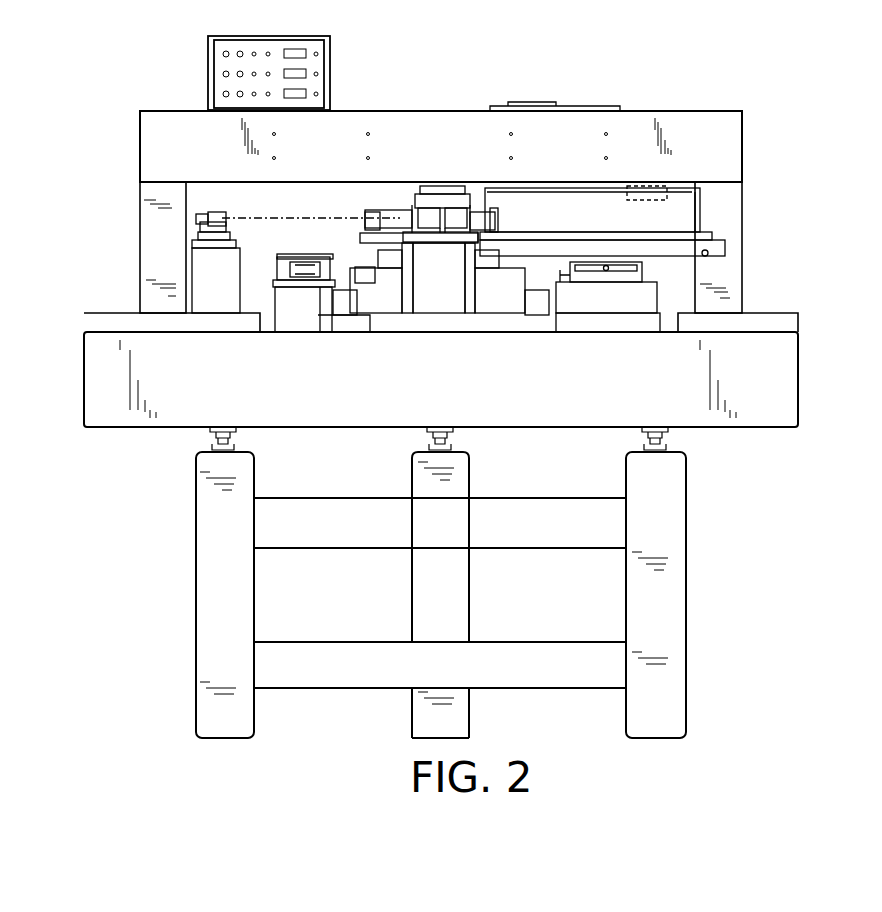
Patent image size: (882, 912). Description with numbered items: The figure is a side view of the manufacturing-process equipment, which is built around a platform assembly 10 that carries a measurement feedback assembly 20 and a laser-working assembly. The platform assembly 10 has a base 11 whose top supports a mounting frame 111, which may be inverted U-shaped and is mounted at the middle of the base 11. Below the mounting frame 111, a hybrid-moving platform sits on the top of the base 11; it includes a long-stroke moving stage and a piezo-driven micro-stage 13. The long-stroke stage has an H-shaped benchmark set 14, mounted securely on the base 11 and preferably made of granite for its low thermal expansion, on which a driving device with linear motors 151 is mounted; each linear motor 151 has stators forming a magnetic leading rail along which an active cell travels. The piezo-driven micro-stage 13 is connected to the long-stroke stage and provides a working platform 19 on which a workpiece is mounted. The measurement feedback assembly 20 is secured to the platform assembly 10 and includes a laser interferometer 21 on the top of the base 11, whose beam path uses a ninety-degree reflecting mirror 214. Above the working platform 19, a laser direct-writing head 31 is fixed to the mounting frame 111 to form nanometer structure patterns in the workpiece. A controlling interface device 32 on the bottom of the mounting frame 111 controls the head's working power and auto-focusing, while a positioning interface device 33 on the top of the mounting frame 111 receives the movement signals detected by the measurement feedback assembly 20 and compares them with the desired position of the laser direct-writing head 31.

The platform assembly 10 is at (786, 452).
The base 11 is at (782, 372).
The mounting frame 111 is at (725, 136).
The piezo-driven micro-stage 13 is at (401, 205).
The benchmark set 14 is at (308, 318).
The linear motor 151 is at (292, 268).
The working platform 19 is at (372, 240).
The measurement feedback assembly 20 is at (660, 296).
The laser interferometer 21 is at (698, 220).
The 90-degree reflecting mirror 214 is at (216, 218).
The laser direct-writing head 31 is at (440, 197).
The controlling interface device 32 is at (622, 196).
The positioning interface device 33 is at (588, 105).